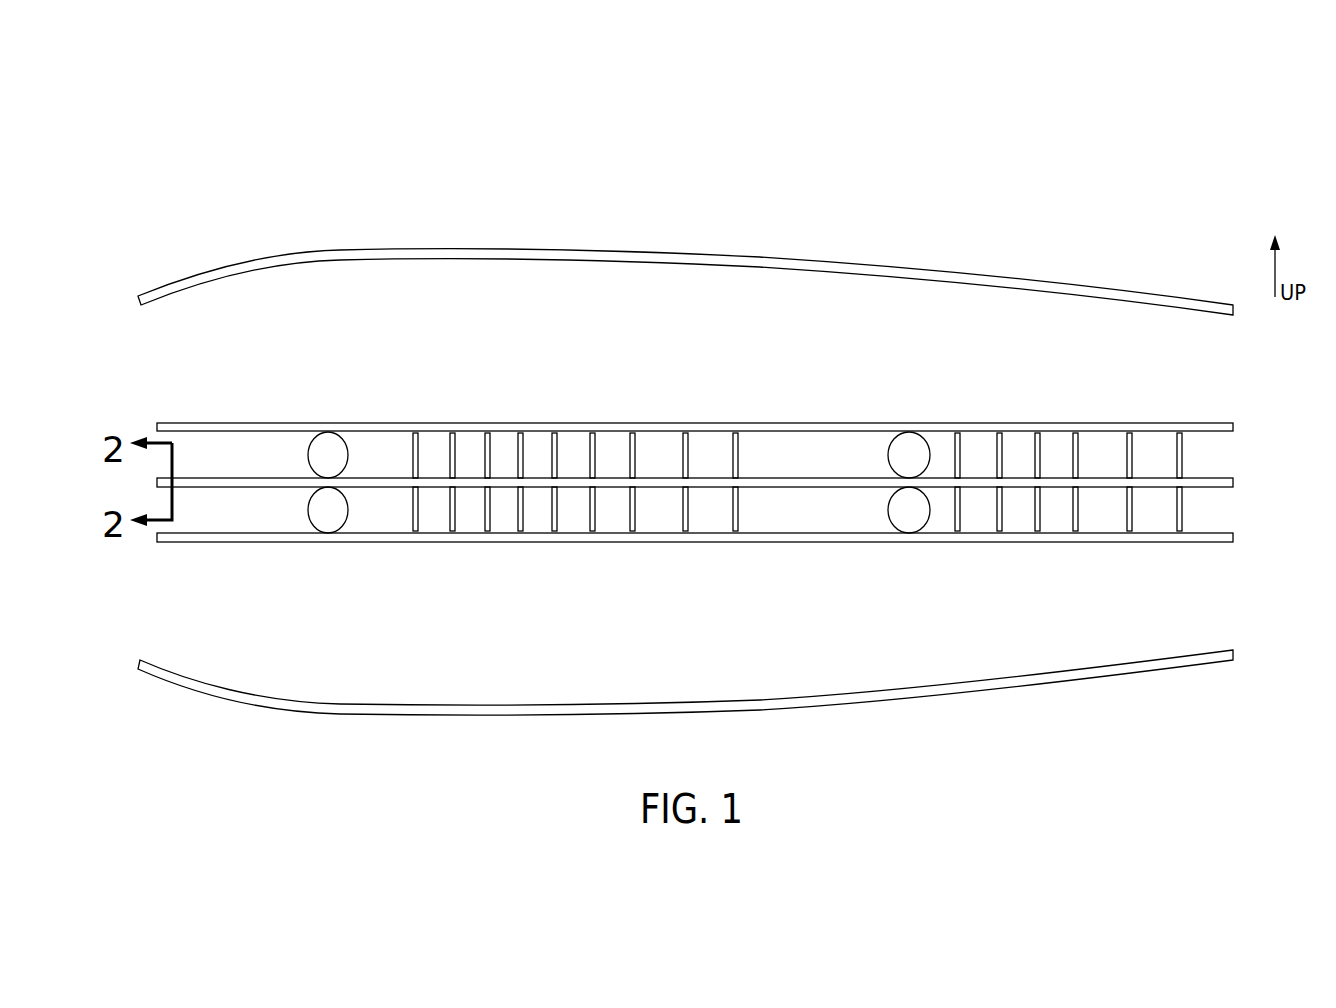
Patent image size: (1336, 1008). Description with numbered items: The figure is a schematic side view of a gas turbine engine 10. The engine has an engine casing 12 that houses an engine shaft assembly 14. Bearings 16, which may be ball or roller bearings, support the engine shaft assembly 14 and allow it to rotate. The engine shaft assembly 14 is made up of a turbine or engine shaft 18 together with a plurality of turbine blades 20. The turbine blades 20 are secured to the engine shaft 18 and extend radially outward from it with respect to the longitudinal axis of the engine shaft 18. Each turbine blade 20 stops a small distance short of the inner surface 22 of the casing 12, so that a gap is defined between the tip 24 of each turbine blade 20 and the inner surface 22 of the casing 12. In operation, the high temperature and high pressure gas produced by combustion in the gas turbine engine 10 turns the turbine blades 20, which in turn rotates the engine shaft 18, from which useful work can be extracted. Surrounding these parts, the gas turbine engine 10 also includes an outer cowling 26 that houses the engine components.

The gas turbine engine 10 is at (169, 140).
The engine casing 12 is at (258, 438).
The engine shaft assembly 14 is at (695, 481).
The bearings 16 is at (332, 515).
The engine shaft 18 is at (783, 487).
The turbine blades 20 is at (415, 430).
The inner surface 22 is at (713, 489).
The tip 24 is at (413, 532).
The outer cowling 26 is at (982, 270).